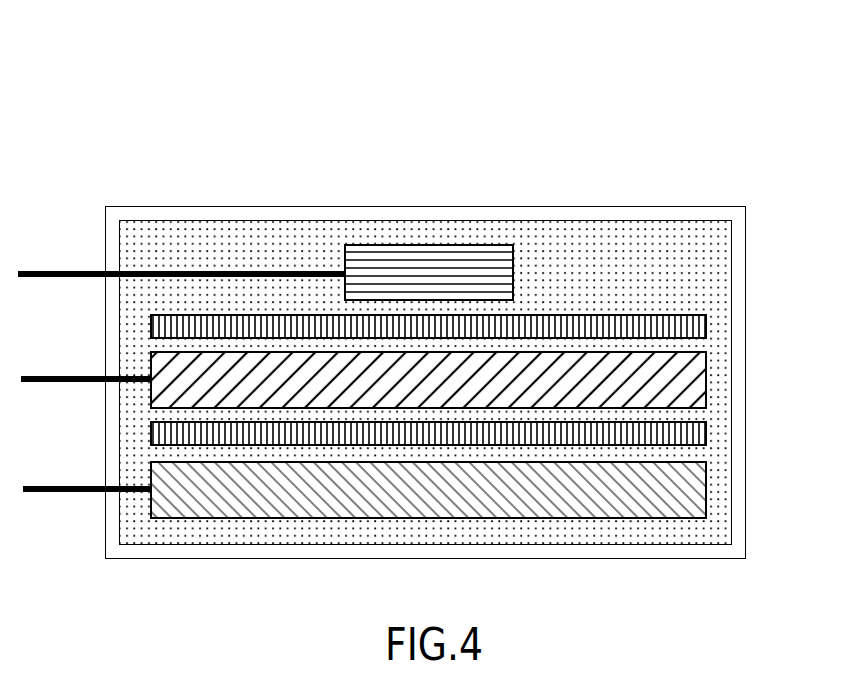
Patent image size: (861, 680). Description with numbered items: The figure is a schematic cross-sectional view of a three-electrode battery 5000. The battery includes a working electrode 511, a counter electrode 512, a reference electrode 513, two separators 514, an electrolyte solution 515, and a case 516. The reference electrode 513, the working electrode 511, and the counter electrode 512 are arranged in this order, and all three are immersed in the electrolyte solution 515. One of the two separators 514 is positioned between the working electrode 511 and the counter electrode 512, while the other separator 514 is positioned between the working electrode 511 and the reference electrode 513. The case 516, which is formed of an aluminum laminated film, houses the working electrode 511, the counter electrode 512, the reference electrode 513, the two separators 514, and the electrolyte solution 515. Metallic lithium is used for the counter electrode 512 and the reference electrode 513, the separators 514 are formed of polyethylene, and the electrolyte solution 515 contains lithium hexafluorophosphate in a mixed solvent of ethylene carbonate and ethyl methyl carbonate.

The three-electrode battery 5000 is at (280, 98).
The working electrode 511 is at (690, 376).
The counter electrode 512 is at (690, 489).
The reference electrode 513 is at (434, 262).
The separators 514 is at (690, 327).
The electrolyte solution 515 is at (645, 262).
The case 516 is at (536, 215).